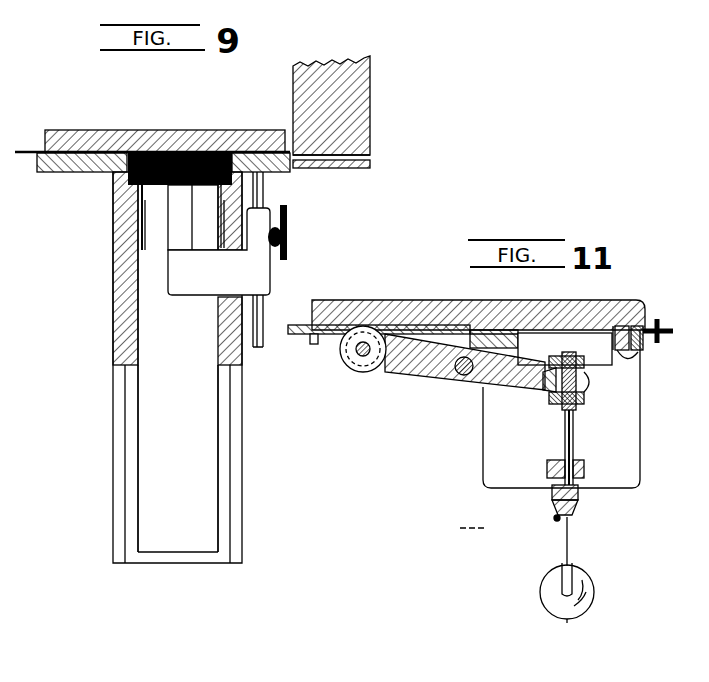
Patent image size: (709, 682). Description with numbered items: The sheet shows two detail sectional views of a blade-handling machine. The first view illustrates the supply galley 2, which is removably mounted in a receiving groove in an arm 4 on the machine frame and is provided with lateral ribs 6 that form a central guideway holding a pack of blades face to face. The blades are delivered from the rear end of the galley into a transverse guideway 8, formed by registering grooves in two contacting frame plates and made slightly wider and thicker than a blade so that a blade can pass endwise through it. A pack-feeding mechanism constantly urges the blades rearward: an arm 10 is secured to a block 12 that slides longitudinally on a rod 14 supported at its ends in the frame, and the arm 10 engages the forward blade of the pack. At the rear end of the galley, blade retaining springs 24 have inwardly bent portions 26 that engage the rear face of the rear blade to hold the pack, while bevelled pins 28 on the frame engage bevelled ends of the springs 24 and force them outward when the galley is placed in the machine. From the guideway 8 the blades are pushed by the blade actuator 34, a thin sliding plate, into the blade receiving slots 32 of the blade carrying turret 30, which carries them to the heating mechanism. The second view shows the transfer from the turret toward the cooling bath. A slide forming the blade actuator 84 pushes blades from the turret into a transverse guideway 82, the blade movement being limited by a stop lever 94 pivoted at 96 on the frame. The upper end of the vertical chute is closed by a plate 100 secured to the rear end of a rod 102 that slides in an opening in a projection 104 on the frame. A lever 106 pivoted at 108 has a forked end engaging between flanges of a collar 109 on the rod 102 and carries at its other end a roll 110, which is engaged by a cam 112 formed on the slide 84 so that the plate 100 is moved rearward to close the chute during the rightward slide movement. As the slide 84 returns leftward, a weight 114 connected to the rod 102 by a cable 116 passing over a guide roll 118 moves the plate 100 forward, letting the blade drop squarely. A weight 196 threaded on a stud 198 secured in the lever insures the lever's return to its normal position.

In FIG. 9, the supply galley 2 is at (205, 400).
In FIG. 9, the arm 4 is at (235, 421).
In FIG. 9, the lateral ribs 6 is at (128, 465).
In FIG. 9, the transverse guideway 8 is at (235, 132).
In FIG. 9, the arm 10 is at (172, 203).
In FIG. 9, the block 12 is at (193, 297).
In FIG. 9, the rod 14 is at (266, 312).
In FIG. 9, the blade retaining springs 24 is at (138, 241).
In FIG. 9, the inwardly bent portions 26 is at (130, 192).
In FIG. 9, the pins 28 is at (143, 130).
In FIG. 9, the blade carrying turret 30 is at (370, 104).
In FIG. 9, the blade receiving slots 32 is at (370, 160).
In FIG. 9, the blade actuator 34 is at (28, 150).
In FIG. 11, the transverse guideway 82 is at (565, 300).
In FIG. 11, the blade actuator (slide) 84 is at (463, 300).
In FIG. 11, the stop lever 94 is at (630, 300).
In FIG. 11, the pivot 96 is at (638, 346).
In FIG. 11, the plate 100 is at (598, 366).
In FIG. 11, the rod 102 is at (575, 436).
In FIG. 11, the projection 104 is at (580, 471).
In FIG. 11, the lever 106 is at (397, 380).
In FIG. 11, the pivot 108 is at (462, 378).
In FIG. 11, the collar 109 is at (585, 398).
In FIG. 11, the roll 110 is at (360, 374).
In FIG. 11, the cam 112 is at (340, 337).
In FIG. 11, the weight 114 is at (540, 593).
In FIG. 11, the cable 116 is at (565, 548).
In FIG. 11, the guide roll 118 is at (564, 580).
In FIG. 11, the weight 196 is at (670, 326).
In FIG. 11, the stud 198 is at (640, 327).